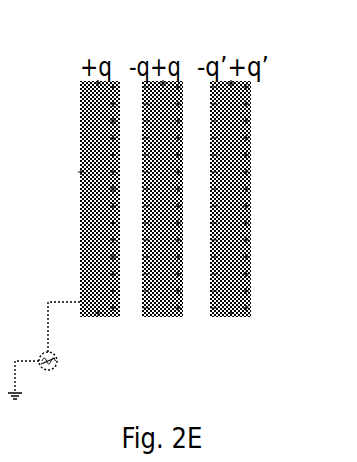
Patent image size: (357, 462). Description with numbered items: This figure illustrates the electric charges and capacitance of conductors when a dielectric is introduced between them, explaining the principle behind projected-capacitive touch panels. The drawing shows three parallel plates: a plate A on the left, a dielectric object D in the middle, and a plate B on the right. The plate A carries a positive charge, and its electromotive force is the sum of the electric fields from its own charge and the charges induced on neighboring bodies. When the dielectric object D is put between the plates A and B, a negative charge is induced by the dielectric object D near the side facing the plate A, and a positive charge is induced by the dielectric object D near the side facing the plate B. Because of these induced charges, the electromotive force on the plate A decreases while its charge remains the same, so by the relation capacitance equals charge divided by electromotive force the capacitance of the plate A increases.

The plate A is at (99, 214).
The dielectric object D is at (162, 214).
The plate B is at (230, 214).